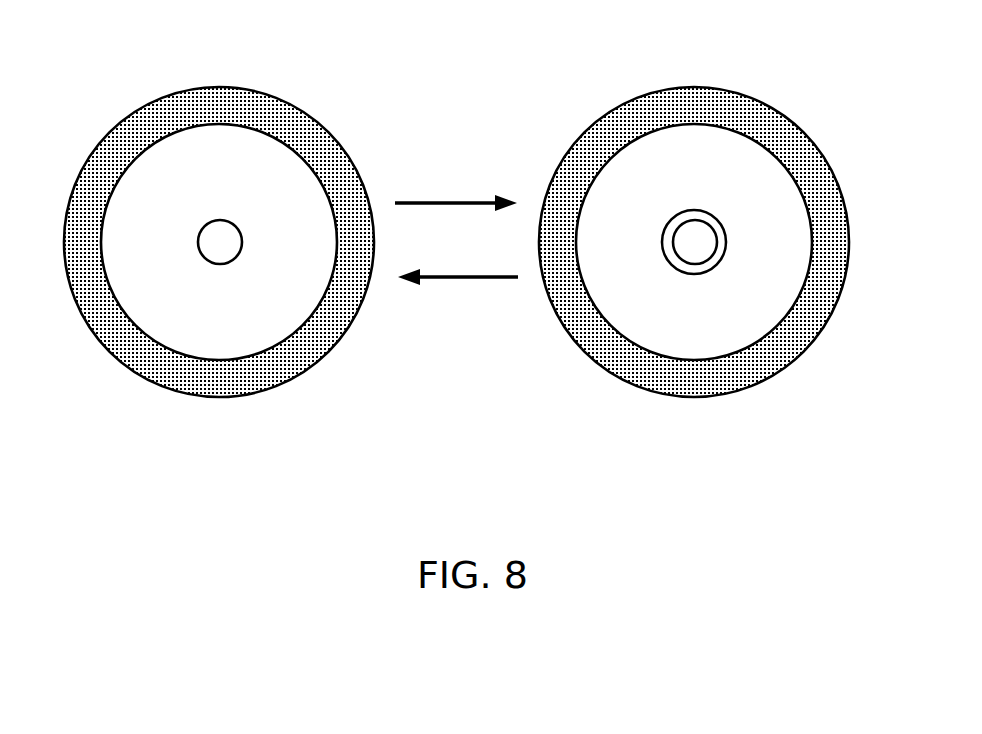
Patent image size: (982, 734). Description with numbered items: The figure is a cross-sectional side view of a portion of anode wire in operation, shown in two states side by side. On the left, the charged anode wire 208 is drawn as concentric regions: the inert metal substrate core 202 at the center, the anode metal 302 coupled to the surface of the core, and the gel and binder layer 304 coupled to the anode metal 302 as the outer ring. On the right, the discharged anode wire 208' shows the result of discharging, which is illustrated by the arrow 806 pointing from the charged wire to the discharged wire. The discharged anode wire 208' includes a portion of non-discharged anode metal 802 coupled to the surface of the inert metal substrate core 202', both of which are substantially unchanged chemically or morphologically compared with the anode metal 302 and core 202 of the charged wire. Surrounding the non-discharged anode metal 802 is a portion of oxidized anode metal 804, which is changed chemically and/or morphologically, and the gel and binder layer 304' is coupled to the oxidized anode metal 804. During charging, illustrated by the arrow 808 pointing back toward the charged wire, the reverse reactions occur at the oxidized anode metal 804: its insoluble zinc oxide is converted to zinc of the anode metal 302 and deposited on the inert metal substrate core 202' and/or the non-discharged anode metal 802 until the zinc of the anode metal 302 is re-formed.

The charged anode wire 208 is at (203, 204).
The inert metal substrate core 202 is at (233, 137).
The anode metal 302 is at (253, 163).
The gel and binder layer 304 is at (219, 242).
The discharged anode wire 208' is at (679, 247).
The inert metal substrate core 202' is at (680, 350).
The gel and binder layer 304' is at (694, 245).
The non-discharged anode metal 802 is at (726, 238).
The oxidized anode metal 804 is at (768, 253).
The arrow 806 is at (423, 205).
The arrow 808 is at (438, 279).